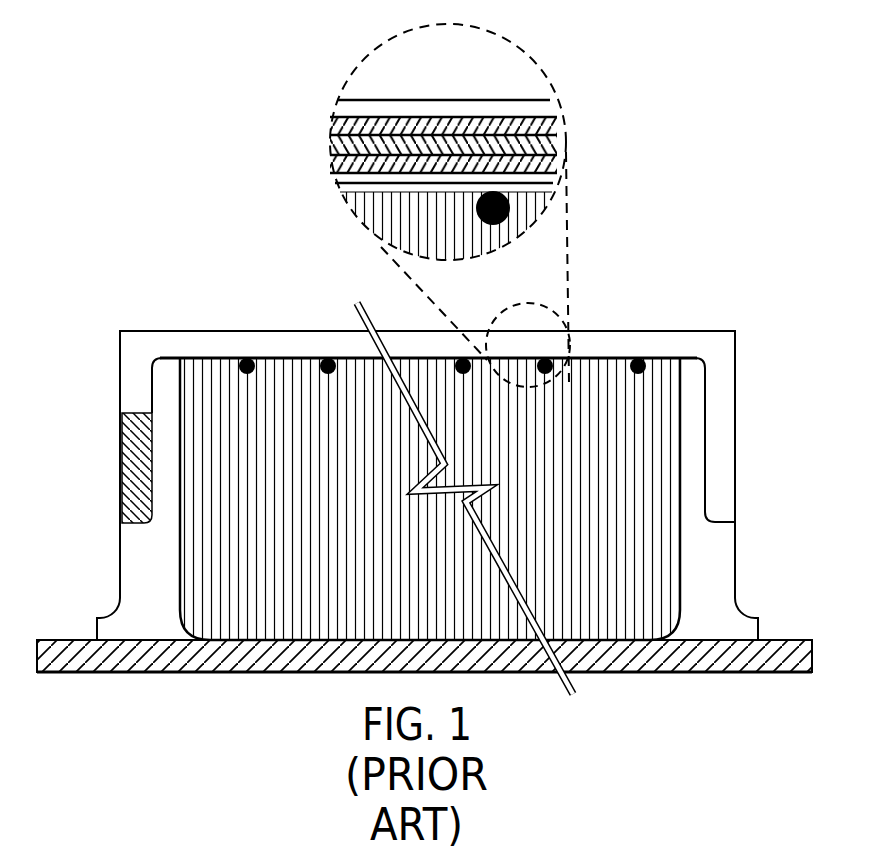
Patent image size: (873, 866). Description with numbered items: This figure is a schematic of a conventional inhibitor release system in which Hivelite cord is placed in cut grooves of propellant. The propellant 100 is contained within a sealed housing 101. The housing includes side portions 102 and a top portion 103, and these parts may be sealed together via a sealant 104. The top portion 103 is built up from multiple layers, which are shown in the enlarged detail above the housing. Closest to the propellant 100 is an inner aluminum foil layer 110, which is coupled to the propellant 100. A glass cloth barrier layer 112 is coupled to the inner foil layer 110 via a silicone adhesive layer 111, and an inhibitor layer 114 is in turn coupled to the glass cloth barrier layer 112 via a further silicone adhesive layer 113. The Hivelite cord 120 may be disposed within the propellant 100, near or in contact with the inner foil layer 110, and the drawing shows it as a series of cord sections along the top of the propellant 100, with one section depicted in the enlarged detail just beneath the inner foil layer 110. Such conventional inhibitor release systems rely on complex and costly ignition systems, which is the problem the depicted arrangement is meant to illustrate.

The propellant 100 is at (377, 217).
The sealed housing 101 is at (163, 553).
The side portions 102 is at (146, 588).
The top portion 103 is at (131, 383).
The sealant 104 is at (119, 497).
The inner aluminum foil layer 110 is at (344, 183).
The silicone adhesive layer 111 is at (552, 165).
The glass cloth barrier layer 112 is at (338, 147).
The silicone adhesive layer 113 is at (554, 127).
The inhibitor layer 114 is at (345, 106).
The Hivelite cord 120 is at (512, 207).